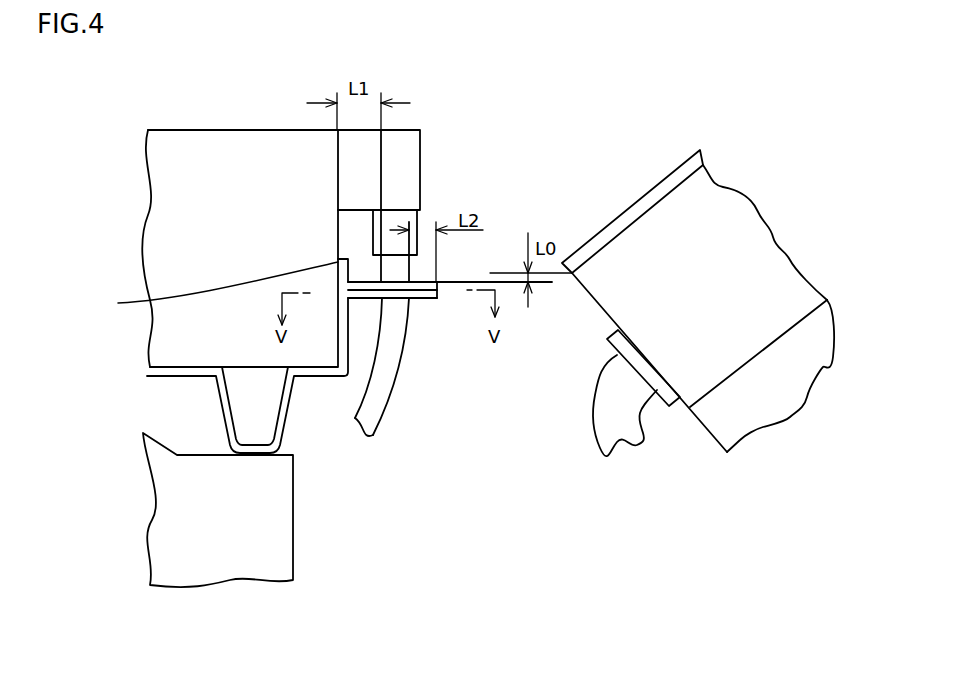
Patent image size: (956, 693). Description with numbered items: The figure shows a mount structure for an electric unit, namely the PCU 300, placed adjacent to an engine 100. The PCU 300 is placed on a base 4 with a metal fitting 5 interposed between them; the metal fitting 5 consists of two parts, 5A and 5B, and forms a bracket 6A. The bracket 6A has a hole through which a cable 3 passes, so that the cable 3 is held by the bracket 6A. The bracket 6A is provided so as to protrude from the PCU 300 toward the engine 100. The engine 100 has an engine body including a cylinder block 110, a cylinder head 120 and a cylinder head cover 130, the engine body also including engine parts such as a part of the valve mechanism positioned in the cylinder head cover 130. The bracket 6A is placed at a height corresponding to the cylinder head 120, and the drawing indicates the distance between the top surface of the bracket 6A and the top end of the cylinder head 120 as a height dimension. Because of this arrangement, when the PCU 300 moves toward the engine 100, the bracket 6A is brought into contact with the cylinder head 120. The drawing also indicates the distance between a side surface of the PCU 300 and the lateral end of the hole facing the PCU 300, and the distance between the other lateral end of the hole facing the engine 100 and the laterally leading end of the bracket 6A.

The PCU 300 is at (172, 230).
The bracket 6A is at (430, 299).
The metal fitting 5 is at (205, 357).
The metal fitting part 5A is at (88, 288).
The metal fitting part 5B is at (214, 288).
The base 4 is at (175, 518).
The cable 3 is at (383, 390).
The engine 100 is at (699, 296).
The cylinder head cover 130 is at (645, 202).
The cylinder head 120 is at (750, 243).
The cylinder block 110 is at (772, 400).